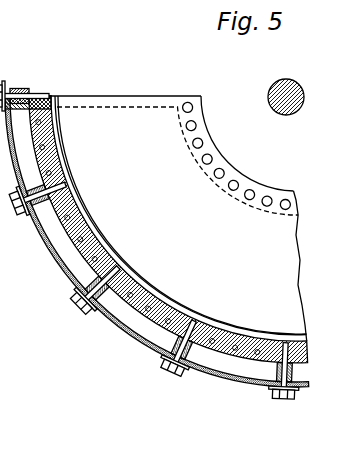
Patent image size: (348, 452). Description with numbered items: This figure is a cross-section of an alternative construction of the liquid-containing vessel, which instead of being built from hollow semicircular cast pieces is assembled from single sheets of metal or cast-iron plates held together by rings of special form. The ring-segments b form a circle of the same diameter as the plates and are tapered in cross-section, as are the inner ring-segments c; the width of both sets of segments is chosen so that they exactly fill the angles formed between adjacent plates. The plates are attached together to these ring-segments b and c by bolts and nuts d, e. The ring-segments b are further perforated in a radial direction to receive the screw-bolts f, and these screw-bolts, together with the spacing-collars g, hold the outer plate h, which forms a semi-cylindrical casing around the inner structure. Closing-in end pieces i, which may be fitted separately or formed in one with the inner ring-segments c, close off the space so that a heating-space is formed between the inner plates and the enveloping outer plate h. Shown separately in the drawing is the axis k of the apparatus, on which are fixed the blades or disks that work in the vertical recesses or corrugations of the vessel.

The ring-segments b is at (100, 243).
The ring-segments c is at (228, 175).
The bolts d is at (62, 147).
The nuts e is at (194, 125).
The screw-bolts f is at (58, 193).
The spacing-collars g is at (42, 218).
The outer plate h is at (22, 192).
The end pieces i is at (151, 146).
The axis k is at (304, 101).